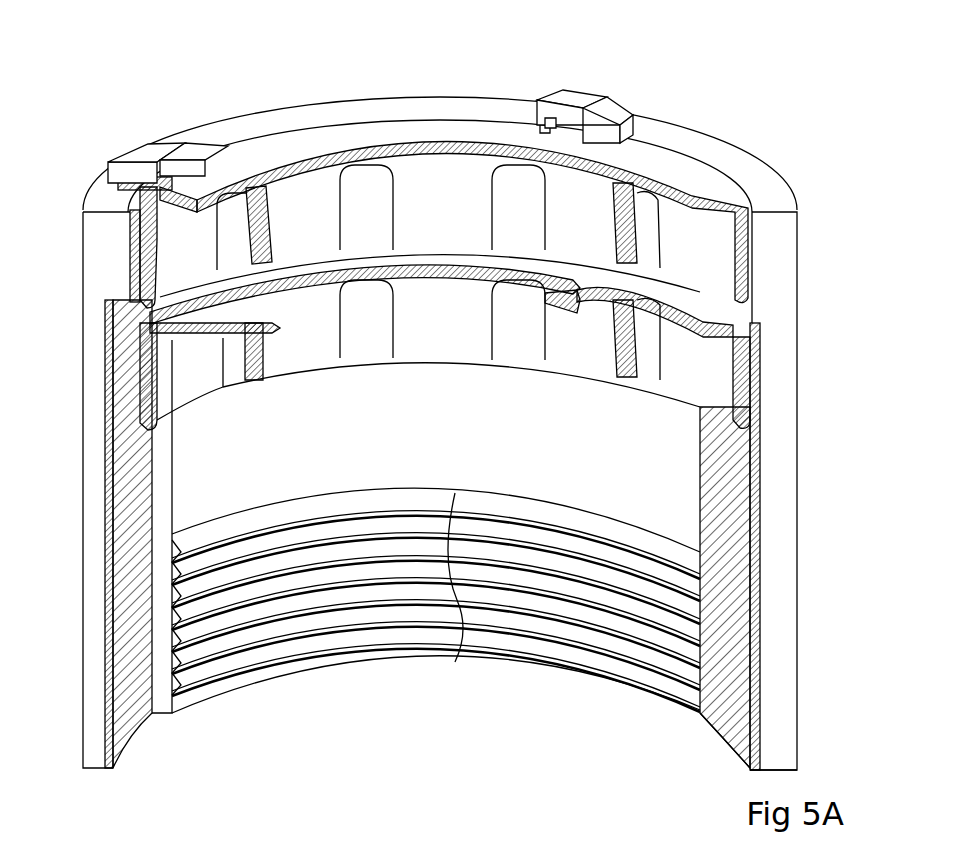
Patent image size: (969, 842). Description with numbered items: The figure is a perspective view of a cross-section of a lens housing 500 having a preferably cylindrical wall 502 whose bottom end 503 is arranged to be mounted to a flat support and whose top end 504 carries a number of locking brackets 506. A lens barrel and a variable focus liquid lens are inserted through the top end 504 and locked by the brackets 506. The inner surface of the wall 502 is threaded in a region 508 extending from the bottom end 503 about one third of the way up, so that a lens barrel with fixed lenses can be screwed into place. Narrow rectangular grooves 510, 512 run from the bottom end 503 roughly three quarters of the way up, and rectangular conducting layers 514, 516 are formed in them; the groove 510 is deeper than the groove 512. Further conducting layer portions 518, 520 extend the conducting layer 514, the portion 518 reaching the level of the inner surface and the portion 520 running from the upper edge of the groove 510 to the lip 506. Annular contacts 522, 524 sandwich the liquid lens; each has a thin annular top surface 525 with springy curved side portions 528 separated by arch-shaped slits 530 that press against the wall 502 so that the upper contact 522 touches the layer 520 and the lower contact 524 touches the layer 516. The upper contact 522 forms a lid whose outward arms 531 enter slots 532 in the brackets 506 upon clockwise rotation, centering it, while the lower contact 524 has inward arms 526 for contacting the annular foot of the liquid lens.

The lens housing 500 is at (452, 409).
The wall 502 is at (775, 275).
The bottom end 503 is at (803, 765).
The top end 504 is at (790, 187).
The locking brackets 506 is at (138, 160).
The threaded region 508 is at (410, 577).
The groove 510 is at (152, 740).
The groove 512 is at (730, 760).
The conducting layer 514 is at (137, 500).
The conducting layer 516 is at (727, 715).
The conducting layer portion 518 is at (108, 298).
The conducting layer portion 520 is at (128, 240).
The annular contact 522 is at (430, 120).
The annular contact 524 is at (438, 362).
The top surface 525 is at (712, 197).
The arms 526 is at (268, 305).
The curved side portions 528 is at (752, 247).
The slits 530 is at (240, 227).
The arms 531 is at (117, 193).
The slot 532 is at (197, 147).